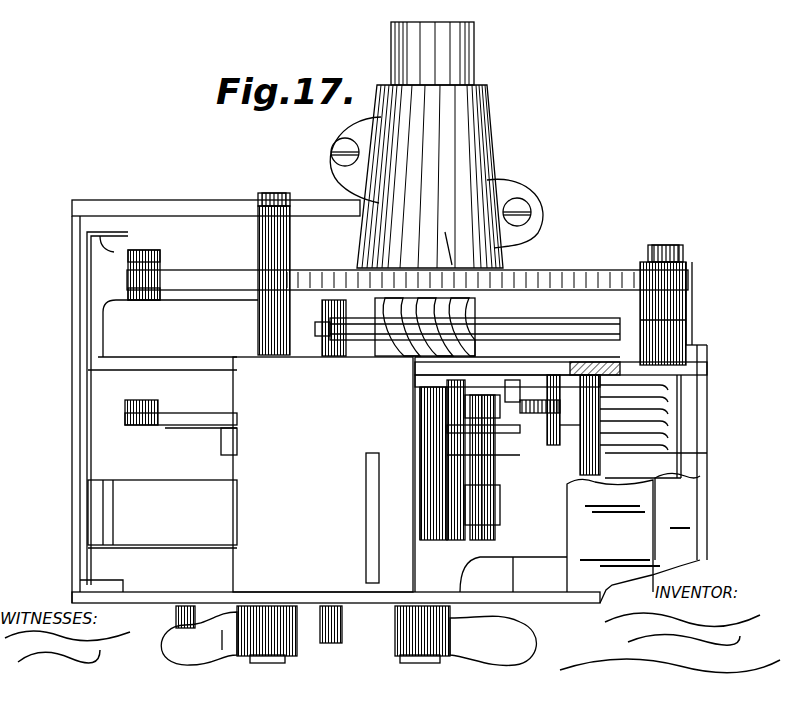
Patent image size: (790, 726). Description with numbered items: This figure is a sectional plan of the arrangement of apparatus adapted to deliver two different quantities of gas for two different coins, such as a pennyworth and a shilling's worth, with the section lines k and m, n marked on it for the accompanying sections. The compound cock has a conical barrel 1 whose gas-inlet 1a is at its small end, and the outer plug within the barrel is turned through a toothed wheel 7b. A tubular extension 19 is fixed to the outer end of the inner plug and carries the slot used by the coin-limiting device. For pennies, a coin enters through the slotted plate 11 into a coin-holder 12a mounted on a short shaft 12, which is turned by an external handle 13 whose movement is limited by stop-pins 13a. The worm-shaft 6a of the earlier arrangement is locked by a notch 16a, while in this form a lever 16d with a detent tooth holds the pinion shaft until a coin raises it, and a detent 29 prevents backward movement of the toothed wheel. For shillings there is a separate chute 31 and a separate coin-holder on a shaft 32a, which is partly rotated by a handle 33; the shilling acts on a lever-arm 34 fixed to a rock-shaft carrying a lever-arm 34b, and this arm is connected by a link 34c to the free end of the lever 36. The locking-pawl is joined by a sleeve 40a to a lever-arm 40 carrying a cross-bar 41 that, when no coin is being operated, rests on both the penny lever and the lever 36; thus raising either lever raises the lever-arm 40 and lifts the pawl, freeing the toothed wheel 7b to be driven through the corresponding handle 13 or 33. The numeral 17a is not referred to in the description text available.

The barrel 1 is at (445, 158).
The gas-inlet 1a is at (432, 53).
The toothed wheel 7b is at (453, 248).
The worm-shaft 6a is at (274, 274).
The slotted plate 11 is at (466, 474).
The shaft 12 is at (287, 657).
The coin-holder 12a is at (170, 508).
The handle 13 is at (199, 638).
The stop-pins 13a is at (395, 626).
The notch 16a is at (538, 428).
The lever 16d is at (560, 425).
The screw 17a is at (196, 420).
The tubular extension 19 is at (425, 540).
The detent 29 is at (212, 298).
The chute 31 is at (513, 486).
The shaft 32a is at (402, 660).
The handle 33 is at (493, 640).
The lever-arm 34 is at (500, 500).
The lever-arm 34b is at (410, 385).
The link 34c is at (447, 440).
The lever 36 is at (552, 345).
The lever-arm 40 is at (620, 408).
The sleeve 40a is at (682, 404).
The cross-bar 41 is at (640, 300).
The section line m is at (72, 302).
The section line n is at (692, 318).
The section line k is at (62, 592).